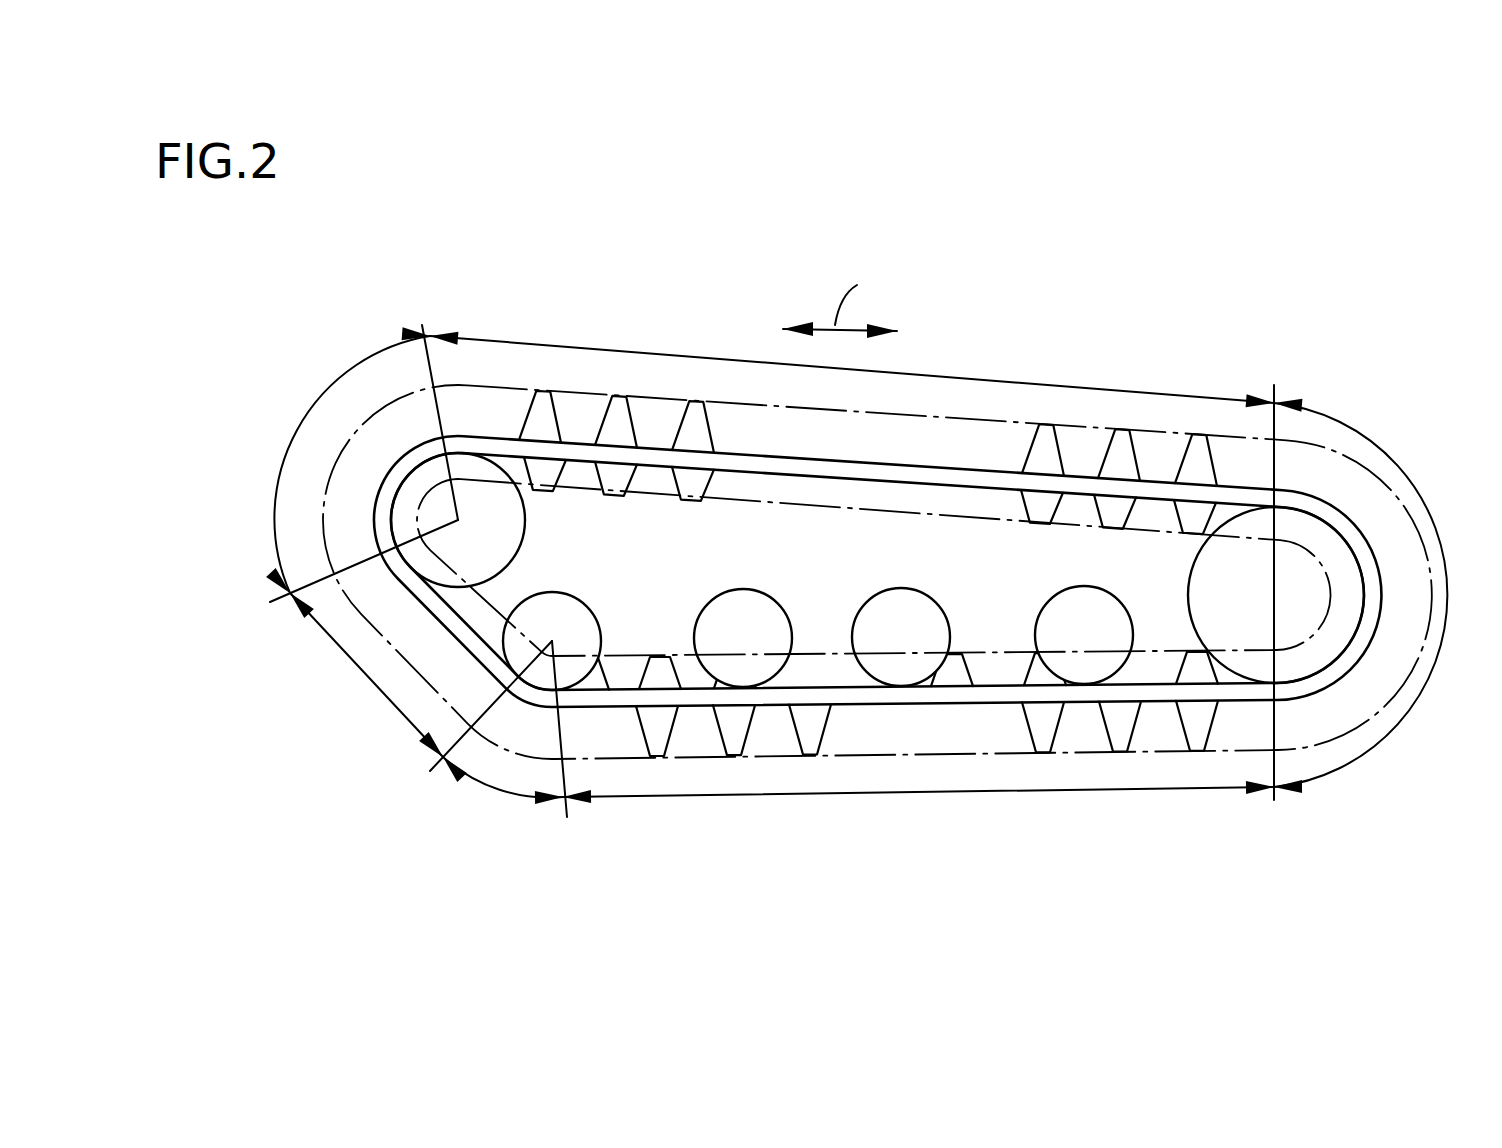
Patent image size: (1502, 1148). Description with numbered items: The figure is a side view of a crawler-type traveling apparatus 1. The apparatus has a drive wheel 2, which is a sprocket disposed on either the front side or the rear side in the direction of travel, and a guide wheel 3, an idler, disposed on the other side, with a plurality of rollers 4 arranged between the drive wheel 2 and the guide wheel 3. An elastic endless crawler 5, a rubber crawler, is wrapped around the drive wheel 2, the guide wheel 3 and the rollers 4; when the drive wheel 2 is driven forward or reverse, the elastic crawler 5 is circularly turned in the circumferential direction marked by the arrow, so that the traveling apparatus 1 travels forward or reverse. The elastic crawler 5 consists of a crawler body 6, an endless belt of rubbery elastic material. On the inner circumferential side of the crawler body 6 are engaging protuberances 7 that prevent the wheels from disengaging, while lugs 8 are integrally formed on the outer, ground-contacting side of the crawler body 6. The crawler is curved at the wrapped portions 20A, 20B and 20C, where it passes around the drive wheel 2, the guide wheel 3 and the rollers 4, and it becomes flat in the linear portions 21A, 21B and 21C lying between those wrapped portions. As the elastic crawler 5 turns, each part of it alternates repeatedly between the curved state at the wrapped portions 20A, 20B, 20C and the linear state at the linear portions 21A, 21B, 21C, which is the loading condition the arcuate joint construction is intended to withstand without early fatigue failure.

The crawler-type traveling apparatus 1 is at (1036, 336).
The drive wheel 2 is at (527, 520).
The guide wheel 3 is at (1190, 615).
The rollers 4 is at (560, 592).
The elastic endless crawler 5 is at (1176, 413).
The crawler body 6 is at (880, 463).
The engaging protuberances 7 is at (652, 667).
The lugs 8 is at (539, 388).
The wrapped portion 20A is at (281, 456).
The wrapped portion 20B is at (1395, 443).
The wrapped portion 20C is at (493, 787).
The linear portion 21A is at (590, 345).
The linear portion 21B is at (840, 793).
The linear portion 21C is at (348, 663).